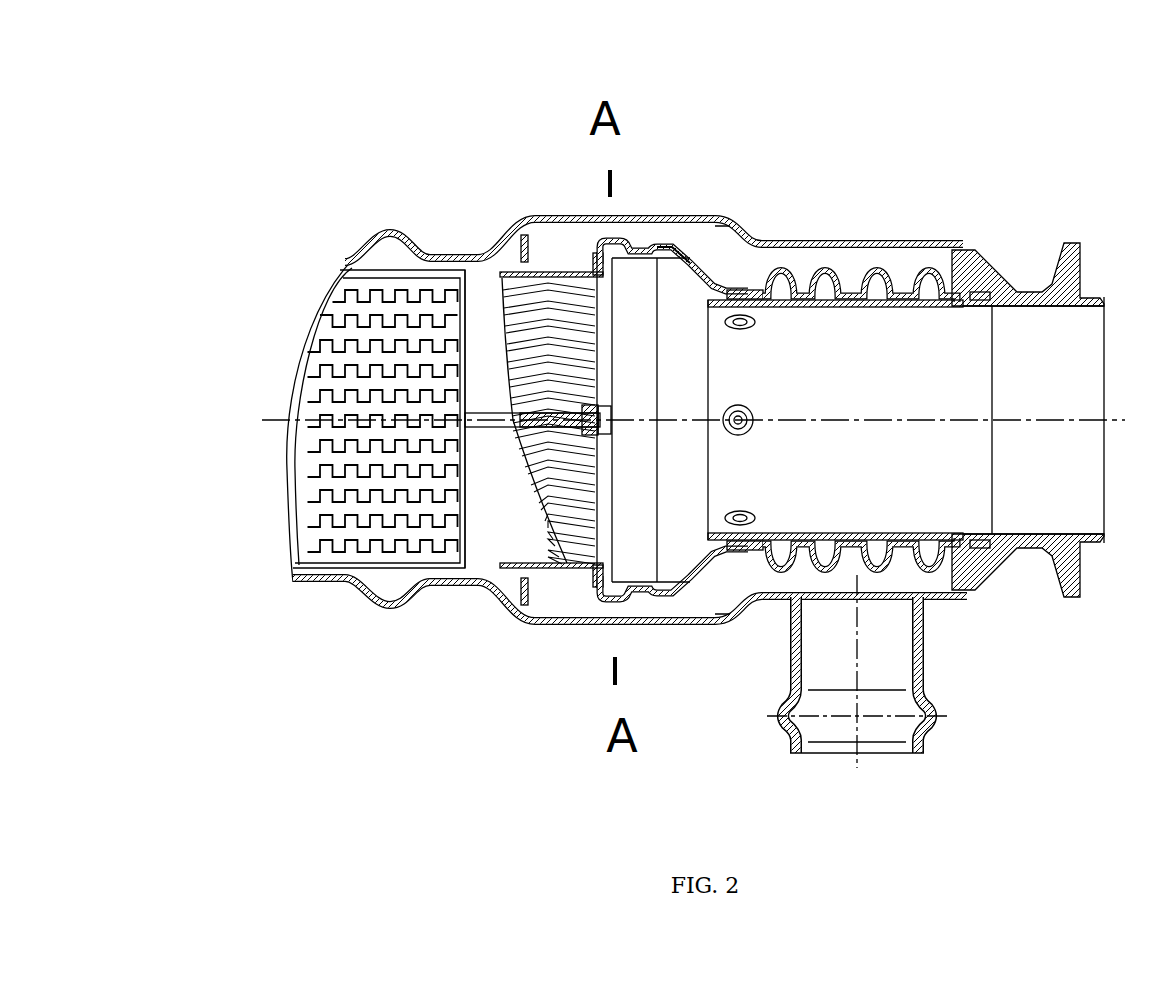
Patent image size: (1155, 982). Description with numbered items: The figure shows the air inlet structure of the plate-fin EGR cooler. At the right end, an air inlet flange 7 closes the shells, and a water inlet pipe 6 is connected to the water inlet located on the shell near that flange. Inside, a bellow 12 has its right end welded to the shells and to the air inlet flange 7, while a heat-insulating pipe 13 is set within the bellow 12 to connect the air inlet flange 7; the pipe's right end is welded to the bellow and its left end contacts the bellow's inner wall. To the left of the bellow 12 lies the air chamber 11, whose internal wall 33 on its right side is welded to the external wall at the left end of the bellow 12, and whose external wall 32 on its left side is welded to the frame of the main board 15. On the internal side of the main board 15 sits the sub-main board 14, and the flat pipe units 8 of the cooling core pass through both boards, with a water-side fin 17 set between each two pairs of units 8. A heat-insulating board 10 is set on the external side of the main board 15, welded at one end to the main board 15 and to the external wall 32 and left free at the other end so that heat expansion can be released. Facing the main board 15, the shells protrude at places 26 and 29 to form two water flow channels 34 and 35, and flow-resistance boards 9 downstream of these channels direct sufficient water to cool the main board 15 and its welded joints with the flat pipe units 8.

The water inlet pipe 6 is at (898, 632).
The air inlet flange 7 is at (1012, 333).
The flat pipe unit 8 is at (513, 498).
The flow-resistance board 9 is at (525, 235).
The heat-insulating board 10 is at (625, 300).
The air chamber 11 is at (680, 320).
The bellow 12 is at (778, 285).
The heat-insulating pipe 13 is at (860, 338).
The sub-main board 14 is at (597, 570).
The main board 15 is at (618, 592).
The water-side fin 17 is at (395, 485).
The bulge on the shell 26 is at (662, 623).
The bulge on the shell 29 is at (612, 262).
The external wall of the air chamber 32 is at (672, 255).
The internal wall of the air chamber 33 is at (730, 290).
The water flow channel 34 is at (710, 600).
The water flow channel 35 is at (562, 250).